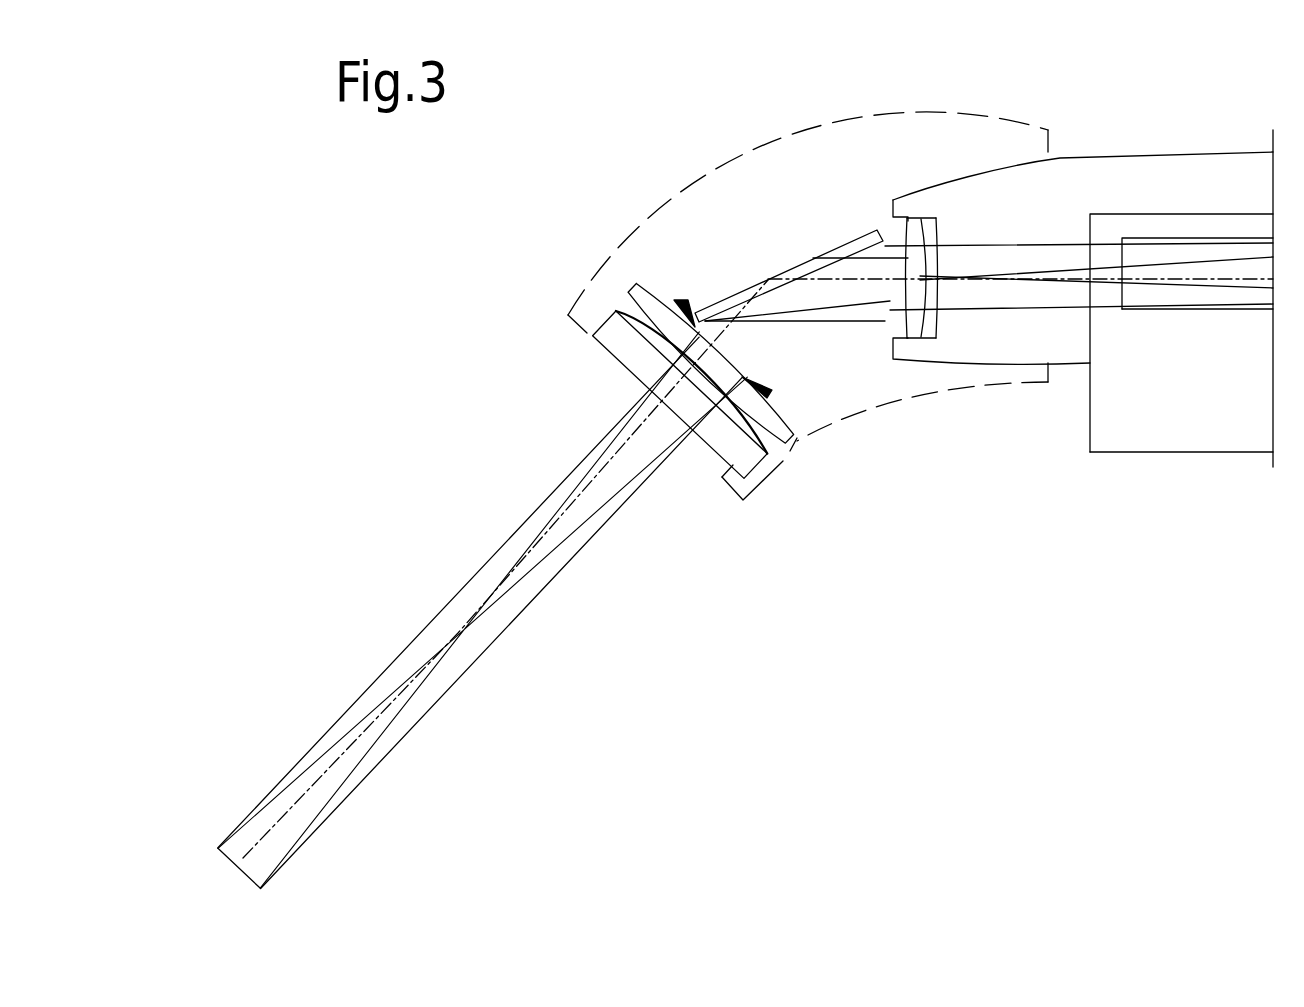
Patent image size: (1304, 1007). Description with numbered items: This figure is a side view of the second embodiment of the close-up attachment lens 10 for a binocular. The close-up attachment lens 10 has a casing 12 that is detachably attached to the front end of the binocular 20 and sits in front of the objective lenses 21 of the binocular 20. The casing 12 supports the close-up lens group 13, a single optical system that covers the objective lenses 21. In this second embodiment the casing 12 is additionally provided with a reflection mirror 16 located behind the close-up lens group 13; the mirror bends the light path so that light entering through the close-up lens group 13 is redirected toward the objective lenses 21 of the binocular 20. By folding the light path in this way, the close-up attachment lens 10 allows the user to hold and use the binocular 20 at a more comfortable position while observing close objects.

The close-up attachment lens 10 is at (1003, 110).
The casing 12 is at (741, 158).
The close-up lens group 13 is at (789, 453).
The reflection mirror 16 is at (748, 282).
The binocular 20 is at (1226, 144).
The objective lens 21 is at (930, 226).